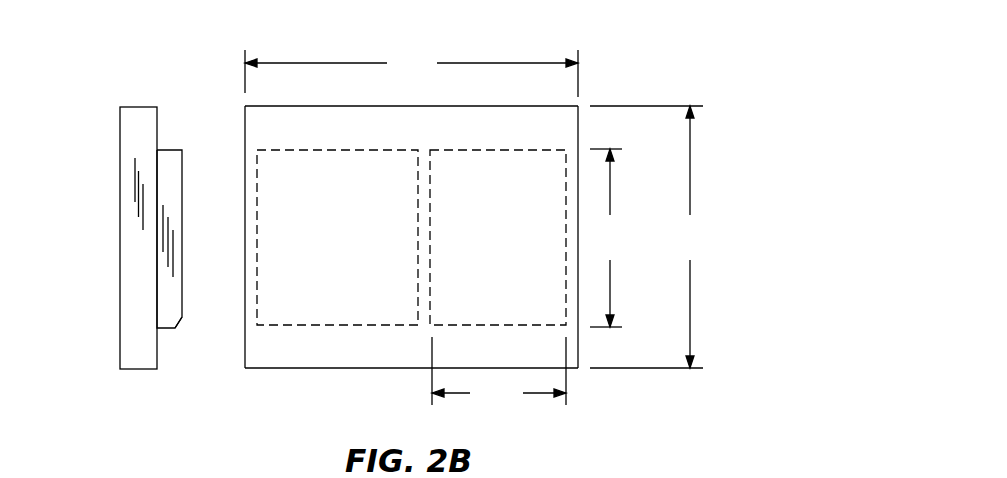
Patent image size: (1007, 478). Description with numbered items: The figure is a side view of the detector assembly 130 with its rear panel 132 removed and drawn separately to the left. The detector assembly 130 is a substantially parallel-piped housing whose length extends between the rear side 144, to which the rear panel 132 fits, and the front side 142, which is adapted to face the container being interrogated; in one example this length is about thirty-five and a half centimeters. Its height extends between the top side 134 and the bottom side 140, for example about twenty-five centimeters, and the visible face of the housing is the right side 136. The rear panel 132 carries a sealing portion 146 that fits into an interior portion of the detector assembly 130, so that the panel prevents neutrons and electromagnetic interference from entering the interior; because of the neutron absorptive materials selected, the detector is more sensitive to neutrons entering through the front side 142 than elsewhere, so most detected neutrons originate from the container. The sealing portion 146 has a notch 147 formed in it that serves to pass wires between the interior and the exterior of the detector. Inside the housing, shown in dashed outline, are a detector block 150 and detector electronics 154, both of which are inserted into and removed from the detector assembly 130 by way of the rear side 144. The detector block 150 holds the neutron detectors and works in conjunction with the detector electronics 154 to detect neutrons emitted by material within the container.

The detector assembly 130 is at (482, 208).
The rear panel 132 is at (120, 238).
The top side 134 is at (473, 106).
The right side 136 is at (428, 237).
The bottom side 140 is at (317, 368).
The front side 142 is at (580, 128).
The rear side 144 is at (245, 237).
The sealing portion 146 is at (172, 148).
The notch 147 is at (177, 320).
The detector block 150 is at (498, 237).
The detector electronics 154 is at (337, 237).